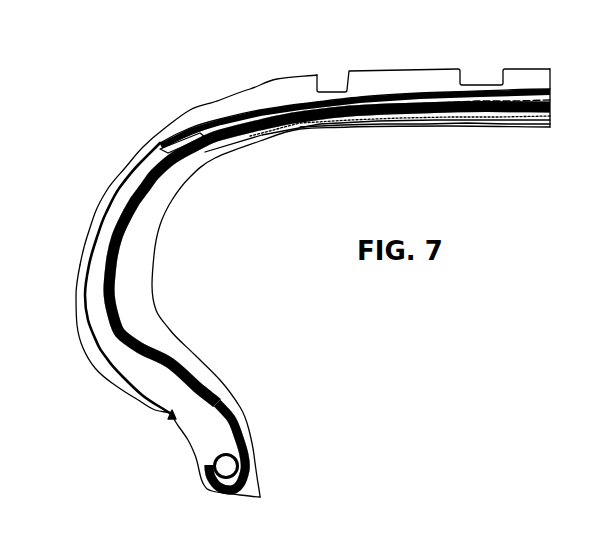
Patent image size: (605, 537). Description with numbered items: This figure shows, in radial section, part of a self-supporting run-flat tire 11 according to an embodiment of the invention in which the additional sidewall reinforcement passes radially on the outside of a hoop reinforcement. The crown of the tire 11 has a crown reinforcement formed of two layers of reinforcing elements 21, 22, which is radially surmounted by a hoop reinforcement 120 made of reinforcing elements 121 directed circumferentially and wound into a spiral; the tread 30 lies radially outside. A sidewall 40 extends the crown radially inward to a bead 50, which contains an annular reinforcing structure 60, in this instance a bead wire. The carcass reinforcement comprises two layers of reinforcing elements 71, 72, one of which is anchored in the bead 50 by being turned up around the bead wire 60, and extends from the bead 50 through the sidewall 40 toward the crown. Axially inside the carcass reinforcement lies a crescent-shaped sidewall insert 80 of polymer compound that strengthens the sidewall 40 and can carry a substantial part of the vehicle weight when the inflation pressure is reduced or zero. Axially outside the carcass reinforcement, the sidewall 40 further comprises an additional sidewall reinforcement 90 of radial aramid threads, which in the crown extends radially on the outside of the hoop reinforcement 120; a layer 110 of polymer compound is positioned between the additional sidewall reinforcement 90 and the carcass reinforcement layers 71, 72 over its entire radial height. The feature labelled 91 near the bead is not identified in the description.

The tire 11 is at (149, 58).
The layer of reinforcing elements 21 is at (222, 110).
The layer of reinforcing elements 22 is at (172, 135).
The tread 30 is at (402, 85).
The sidewall 40 is at (85, 243).
The bead 50 is at (256, 477).
The annular reinforcing structure 60 is at (217, 469).
The layer of reinforcing elements 71 is at (222, 382).
The layer of reinforcing elements 72 is at (248, 430).
The sidewall insert 80 is at (143, 242).
The additional sidewall reinforcement 90 is at (86, 353).
The rim line 91 is at (172, 419).
The layer of polymer compound 110 is at (92, 305).
The hoop reinforcement 120 is at (284, 100).
The reinforcing elements 121 is at (487, 92).